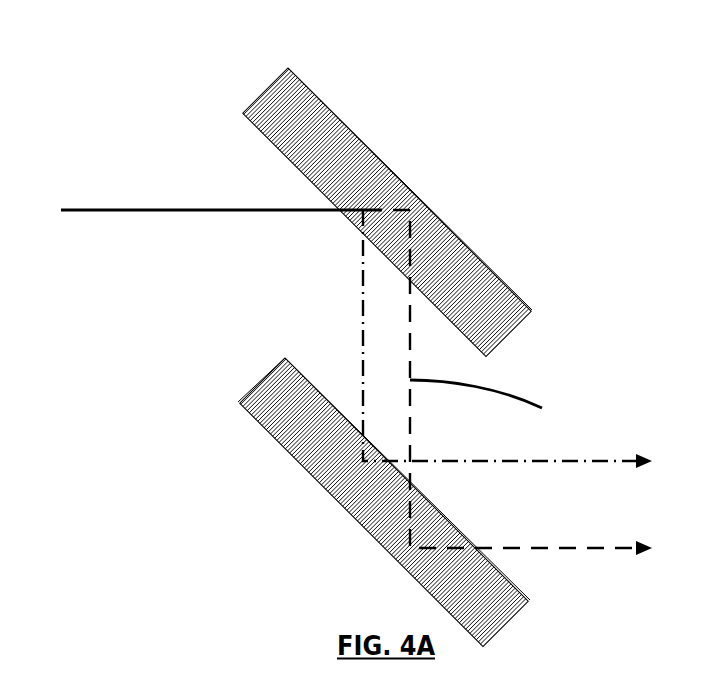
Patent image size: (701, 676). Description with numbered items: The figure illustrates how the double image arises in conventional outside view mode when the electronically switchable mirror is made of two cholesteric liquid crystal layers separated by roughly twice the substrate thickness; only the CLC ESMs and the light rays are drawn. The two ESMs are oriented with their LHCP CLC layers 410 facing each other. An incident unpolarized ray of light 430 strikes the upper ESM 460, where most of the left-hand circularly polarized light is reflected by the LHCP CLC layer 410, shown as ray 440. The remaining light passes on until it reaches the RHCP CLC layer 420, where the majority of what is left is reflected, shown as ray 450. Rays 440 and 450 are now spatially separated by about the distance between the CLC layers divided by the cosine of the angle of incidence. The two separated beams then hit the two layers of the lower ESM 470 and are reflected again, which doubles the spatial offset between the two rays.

The LHCP CLC layer 410 is at (342, 122).
The RHCP CLC layer 420 is at (515, 291).
The incident unpolarized ray of light 430 is at (178, 208).
The ray 440 is at (360, 292).
The ray 450 is at (499, 403).
The upper ESM 460 is at (468, 246).
The lower ESM 470 is at (262, 379).